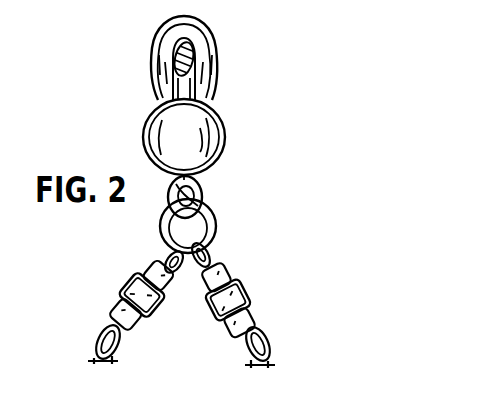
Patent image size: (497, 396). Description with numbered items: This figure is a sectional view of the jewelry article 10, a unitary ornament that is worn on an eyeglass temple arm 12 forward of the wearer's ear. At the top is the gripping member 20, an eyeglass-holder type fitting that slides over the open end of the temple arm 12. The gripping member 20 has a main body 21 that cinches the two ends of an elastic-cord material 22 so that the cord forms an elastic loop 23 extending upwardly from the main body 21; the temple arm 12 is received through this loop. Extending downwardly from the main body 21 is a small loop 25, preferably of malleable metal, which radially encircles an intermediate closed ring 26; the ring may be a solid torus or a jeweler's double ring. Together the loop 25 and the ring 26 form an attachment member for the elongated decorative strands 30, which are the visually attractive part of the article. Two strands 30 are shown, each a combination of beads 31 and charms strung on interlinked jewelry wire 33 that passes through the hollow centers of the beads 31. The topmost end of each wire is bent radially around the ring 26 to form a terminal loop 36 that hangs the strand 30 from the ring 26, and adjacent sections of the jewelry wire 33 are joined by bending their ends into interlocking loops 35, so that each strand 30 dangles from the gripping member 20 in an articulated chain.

The jewelry article 10 is at (266, 122).
The temple arm 12 is at (188, 53).
The gripping member 20 is at (150, 108).
The main body 21 is at (222, 125).
The elastic-cord material 22 is at (168, 70).
The elastic loop 23 is at (150, 43).
The small loop 25 is at (202, 190).
The intermediate closed ring 26 is at (214, 222).
The elongated decorative strand 30 is at (120, 285).
The bead 31 is at (133, 283).
The jewelry wire 33 is at (126, 340).
The interlocking loop 35 is at (97, 353).
The terminal loop 36 is at (166, 255).